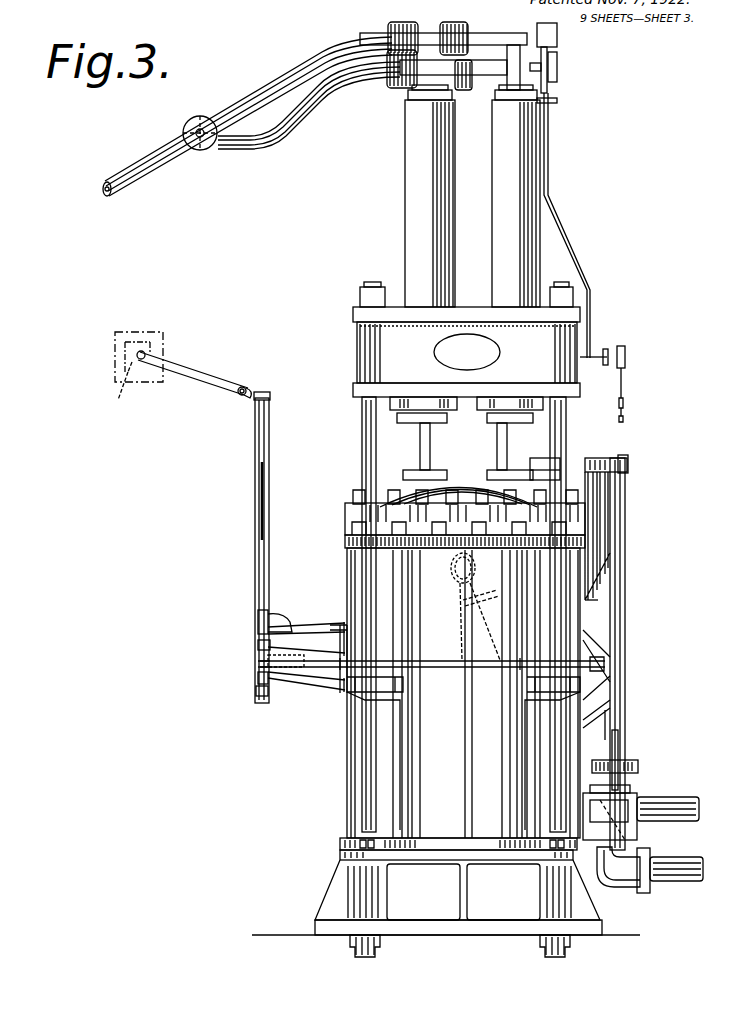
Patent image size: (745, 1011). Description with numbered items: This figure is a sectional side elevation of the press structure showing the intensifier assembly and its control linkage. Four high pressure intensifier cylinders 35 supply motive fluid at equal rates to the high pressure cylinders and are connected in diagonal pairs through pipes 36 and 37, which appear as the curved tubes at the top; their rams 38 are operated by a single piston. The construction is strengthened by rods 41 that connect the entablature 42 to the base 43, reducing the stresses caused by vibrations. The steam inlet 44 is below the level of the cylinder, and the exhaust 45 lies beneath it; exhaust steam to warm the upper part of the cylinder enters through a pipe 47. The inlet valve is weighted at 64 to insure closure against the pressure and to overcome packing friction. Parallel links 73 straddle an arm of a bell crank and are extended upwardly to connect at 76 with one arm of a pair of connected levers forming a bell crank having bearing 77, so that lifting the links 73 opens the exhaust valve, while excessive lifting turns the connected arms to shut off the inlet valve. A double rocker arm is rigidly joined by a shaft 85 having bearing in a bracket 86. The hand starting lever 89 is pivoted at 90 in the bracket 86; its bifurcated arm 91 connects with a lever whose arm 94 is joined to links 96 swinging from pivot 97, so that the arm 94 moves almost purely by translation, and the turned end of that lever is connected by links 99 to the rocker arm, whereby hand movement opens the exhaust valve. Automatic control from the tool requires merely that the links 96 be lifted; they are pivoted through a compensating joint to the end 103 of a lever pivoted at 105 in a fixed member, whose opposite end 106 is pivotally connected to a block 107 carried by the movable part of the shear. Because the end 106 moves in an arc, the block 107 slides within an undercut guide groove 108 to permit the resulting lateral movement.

The high pressure intensifier cylinders 35 is at (413, 220).
The pipe 36 is at (320, 86).
The pipe 37 is at (272, 82).
The rams 38 is at (500, 452).
The rods 41 is at (568, 432).
The entablature 42 is at (398, 357).
The base 43 is at (432, 903).
The steam inlet 44 is at (660, 812).
The exhaust 45 is at (667, 870).
The pipe 47 is at (474, 635).
The weight 64 is at (640, 766).
The parallel links 73 is at (623, 612).
The connection 76 is at (628, 460).
The bearing 77 is at (600, 458).
The shaft 85 is at (432, 668).
The bracket 86 is at (302, 636).
The hand starting lever 89 is at (255, 544).
The pivot 90 is at (258, 644).
The arm 91 is at (256, 663).
The arm 94 is at (256, 680).
The links 96 is at (270, 466).
The pivot 97 is at (270, 396).
The links 99 is at (254, 692).
The end of lever 103 is at (250, 386).
The pivot 105 is at (238, 396).
The opposite end of lever 106 is at (168, 360).
The block 107 is at (123, 398).
The undercut guide groove 108 is at (116, 358).